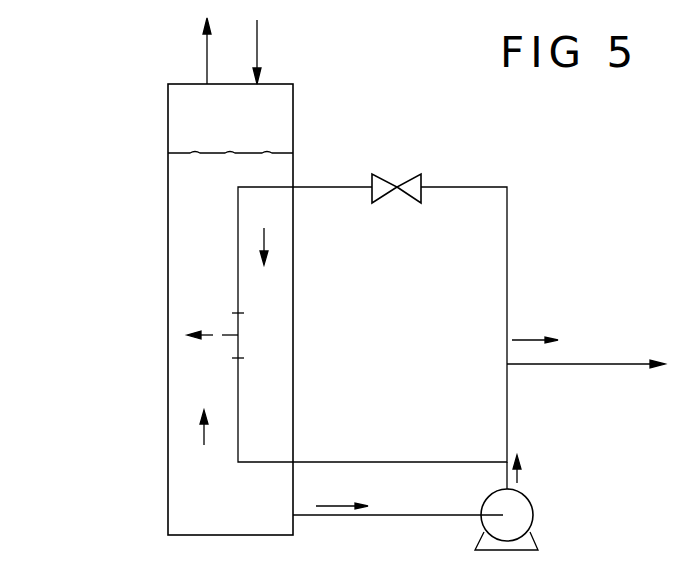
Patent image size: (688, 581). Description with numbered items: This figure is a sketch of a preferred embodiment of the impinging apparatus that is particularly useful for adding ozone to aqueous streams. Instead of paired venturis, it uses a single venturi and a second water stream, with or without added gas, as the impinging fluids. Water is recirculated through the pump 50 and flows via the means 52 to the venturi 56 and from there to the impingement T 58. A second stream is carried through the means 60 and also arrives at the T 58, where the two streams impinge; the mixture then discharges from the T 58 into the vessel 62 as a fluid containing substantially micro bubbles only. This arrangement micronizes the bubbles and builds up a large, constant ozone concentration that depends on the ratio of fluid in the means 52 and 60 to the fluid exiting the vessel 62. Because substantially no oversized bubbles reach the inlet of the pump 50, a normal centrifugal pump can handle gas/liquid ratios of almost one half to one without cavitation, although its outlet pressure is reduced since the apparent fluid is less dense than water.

The pump 50 is at (533, 518).
The recirculation means 52 is at (507, 279).
The venturi 56 is at (398, 181).
The impingement T 58 is at (245, 337).
The second stream means 60 is at (305, 462).
The vessel 62 is at (168, 386).